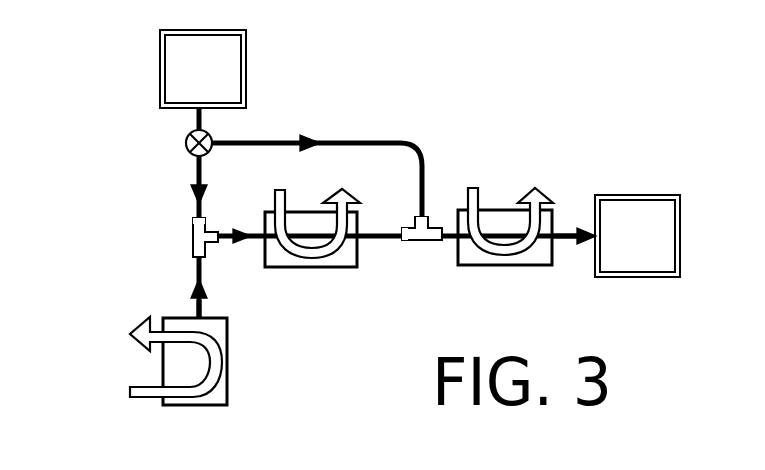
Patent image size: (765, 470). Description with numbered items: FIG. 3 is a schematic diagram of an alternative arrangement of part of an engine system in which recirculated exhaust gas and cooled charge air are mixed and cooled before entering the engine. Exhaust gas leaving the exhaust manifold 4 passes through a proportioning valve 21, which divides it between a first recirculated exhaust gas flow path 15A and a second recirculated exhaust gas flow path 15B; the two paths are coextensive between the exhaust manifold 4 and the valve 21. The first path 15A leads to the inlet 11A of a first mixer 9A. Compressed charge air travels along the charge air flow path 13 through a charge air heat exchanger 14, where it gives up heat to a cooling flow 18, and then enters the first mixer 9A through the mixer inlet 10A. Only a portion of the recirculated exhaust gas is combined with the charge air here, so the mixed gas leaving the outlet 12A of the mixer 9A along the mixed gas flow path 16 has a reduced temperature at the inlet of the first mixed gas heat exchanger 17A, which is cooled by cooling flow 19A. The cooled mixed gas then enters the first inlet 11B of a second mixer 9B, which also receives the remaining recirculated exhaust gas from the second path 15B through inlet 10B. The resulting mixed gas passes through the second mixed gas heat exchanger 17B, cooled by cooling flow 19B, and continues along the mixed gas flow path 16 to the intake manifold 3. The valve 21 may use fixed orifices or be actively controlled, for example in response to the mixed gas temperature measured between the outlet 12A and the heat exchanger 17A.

The intake manifold 3 is at (637, 236).
The exhaust manifold 4 is at (203, 69).
The proportioning valve 21 is at (188, 148).
The first recirculated exhaust gas flow path 15A is at (194, 180).
The second recirculated exhaust gas flow path 15B is at (333, 142).
The inlet of first mixer 11A is at (203, 220).
The first inlet of second mixer 11B is at (416, 218).
The first mixer 9A is at (193, 236).
The second mixer 9B is at (424, 240).
The mixer inlet 10A is at (196, 268).
The second inlet of second T-connector 10B is at (402, 240).
The outlet of first mixer 12A is at (218, 240).
The charge air flow path 13 is at (201, 308).
The charge air heat exchanger 14 is at (227, 397).
The cooling flow 18 is at (145, 344).
The first mixed gas heat exchanger 17A is at (285, 268).
The second mixed gas heat exchanger 17B is at (533, 267).
The cooling flow 19A is at (283, 196).
The cooling flow 19B is at (543, 188).
The mixed gas flow path 16 is at (572, 257).